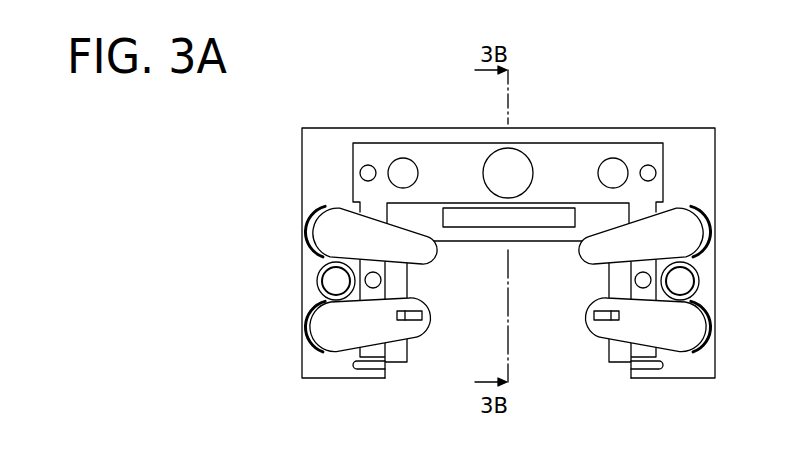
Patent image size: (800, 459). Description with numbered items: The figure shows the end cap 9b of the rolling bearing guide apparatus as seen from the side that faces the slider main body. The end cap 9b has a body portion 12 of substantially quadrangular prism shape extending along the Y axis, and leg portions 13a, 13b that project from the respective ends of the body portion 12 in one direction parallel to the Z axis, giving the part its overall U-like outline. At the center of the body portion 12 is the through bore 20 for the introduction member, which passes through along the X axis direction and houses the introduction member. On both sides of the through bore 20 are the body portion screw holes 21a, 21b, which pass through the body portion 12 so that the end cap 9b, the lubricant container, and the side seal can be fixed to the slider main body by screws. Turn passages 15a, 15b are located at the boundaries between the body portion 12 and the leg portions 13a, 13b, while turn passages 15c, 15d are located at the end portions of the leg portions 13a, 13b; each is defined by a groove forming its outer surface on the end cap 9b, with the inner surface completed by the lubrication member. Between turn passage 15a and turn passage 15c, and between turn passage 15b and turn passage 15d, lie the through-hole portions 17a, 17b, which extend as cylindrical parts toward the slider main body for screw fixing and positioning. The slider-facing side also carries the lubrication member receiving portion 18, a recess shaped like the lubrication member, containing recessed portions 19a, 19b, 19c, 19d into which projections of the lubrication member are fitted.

The end cap 9b is at (460, 111).
The body portion 12 is at (577, 138).
The leg portion 13a is at (325, 369).
The leg portion 13b is at (685, 370).
The turn passage 15a is at (333, 227).
The turn passage 15b is at (683, 227).
The turn passage 15c is at (333, 330).
The turn passage 15d is at (683, 338).
The through-hole portion 17a is at (335, 287).
The through-hole portion 17b is at (681, 287).
The lubrication member receiving portion 18 is at (403, 143).
The recessed portion 19a is at (365, 172).
The recessed portion 19b is at (650, 167).
The recessed portion 19c is at (381, 280).
The recessed portion 19d is at (635, 280).
The through bore for the introduction member 20 is at (507, 190).
The body portion screw hole 21a is at (403, 183).
The body portion screw hole 21b is at (613, 182).